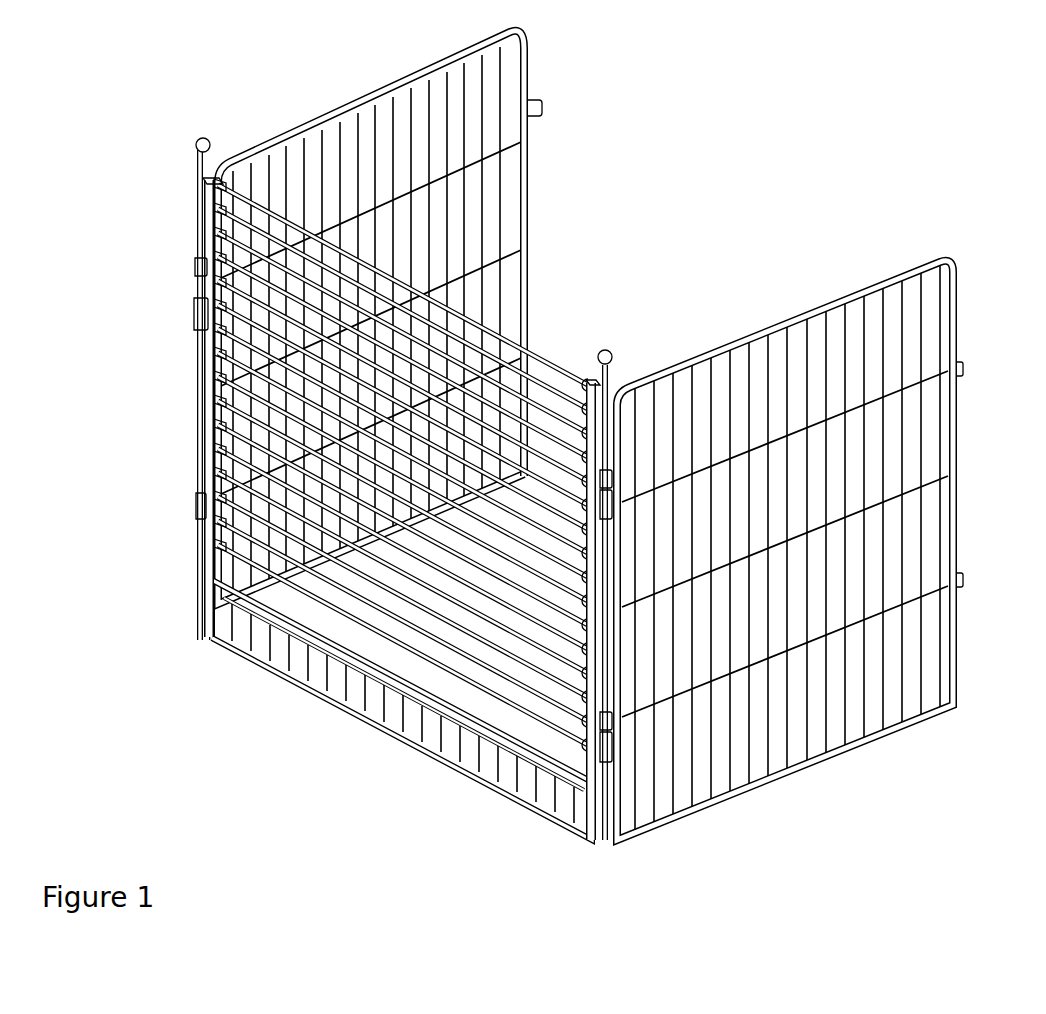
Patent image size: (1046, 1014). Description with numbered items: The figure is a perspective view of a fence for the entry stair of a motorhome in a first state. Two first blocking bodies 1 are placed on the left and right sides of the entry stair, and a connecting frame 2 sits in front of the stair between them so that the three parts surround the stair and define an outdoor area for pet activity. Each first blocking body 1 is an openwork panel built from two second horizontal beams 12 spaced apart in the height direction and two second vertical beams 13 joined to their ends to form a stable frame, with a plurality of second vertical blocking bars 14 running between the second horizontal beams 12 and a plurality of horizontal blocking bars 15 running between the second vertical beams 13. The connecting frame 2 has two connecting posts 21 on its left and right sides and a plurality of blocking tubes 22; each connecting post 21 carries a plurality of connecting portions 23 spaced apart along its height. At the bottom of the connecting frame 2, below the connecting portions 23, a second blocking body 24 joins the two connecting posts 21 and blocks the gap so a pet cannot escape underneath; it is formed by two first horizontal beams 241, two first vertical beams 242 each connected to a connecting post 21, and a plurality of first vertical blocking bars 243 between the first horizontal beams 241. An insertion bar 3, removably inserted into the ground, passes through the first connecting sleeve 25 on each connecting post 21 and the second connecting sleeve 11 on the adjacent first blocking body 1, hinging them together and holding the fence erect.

The first blocking body 1 is at (587, 445).
The second connecting sleeve 11 is at (540, 107).
The second horizontal beam 12 is at (297, 128).
The second vertical beam 13 is at (528, 176).
The second vertical blocking bar 14 is at (502, 213).
The horizontal blocking bar 15 is at (492, 263).
The connecting frame 2 is at (321, 509).
The connecting post 21 is at (202, 438).
The blocking tube 22 is at (233, 505).
The connecting portion 23 is at (210, 472).
The second blocking body 24 is at (317, 710).
The first horizontal beam 241 is at (258, 660).
The first vertical beam 242 is at (206, 610).
The first vertical blocking bar 243 is at (248, 632).
The first connecting sleeve 25 is at (194, 304).
The insertion bar 3 is at (166, 389).